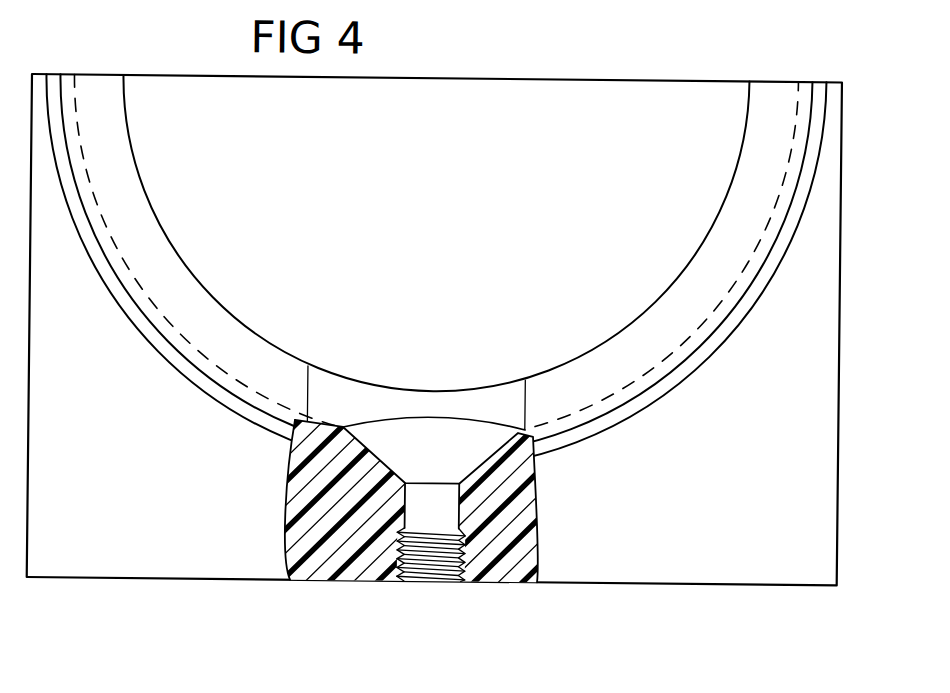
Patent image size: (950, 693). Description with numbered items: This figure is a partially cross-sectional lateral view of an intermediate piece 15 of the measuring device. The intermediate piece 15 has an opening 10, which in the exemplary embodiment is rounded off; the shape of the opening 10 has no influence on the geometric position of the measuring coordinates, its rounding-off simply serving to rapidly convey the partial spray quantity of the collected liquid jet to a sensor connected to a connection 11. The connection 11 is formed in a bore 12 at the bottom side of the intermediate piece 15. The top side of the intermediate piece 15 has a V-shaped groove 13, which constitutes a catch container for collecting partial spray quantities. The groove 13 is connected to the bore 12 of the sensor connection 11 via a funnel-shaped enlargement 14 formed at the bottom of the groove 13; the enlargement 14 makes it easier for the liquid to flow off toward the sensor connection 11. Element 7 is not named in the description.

The outer layer of ring 7 is at (54, 122).
The opening 10 is at (612, 328).
The connection 11 is at (445, 576).
The bore 12 is at (428, 506).
The V-shaped groove 13 is at (213, 361).
The funnel-shaped enlargement 14 is at (470, 456).
The intermediate piece 15 is at (806, 372).